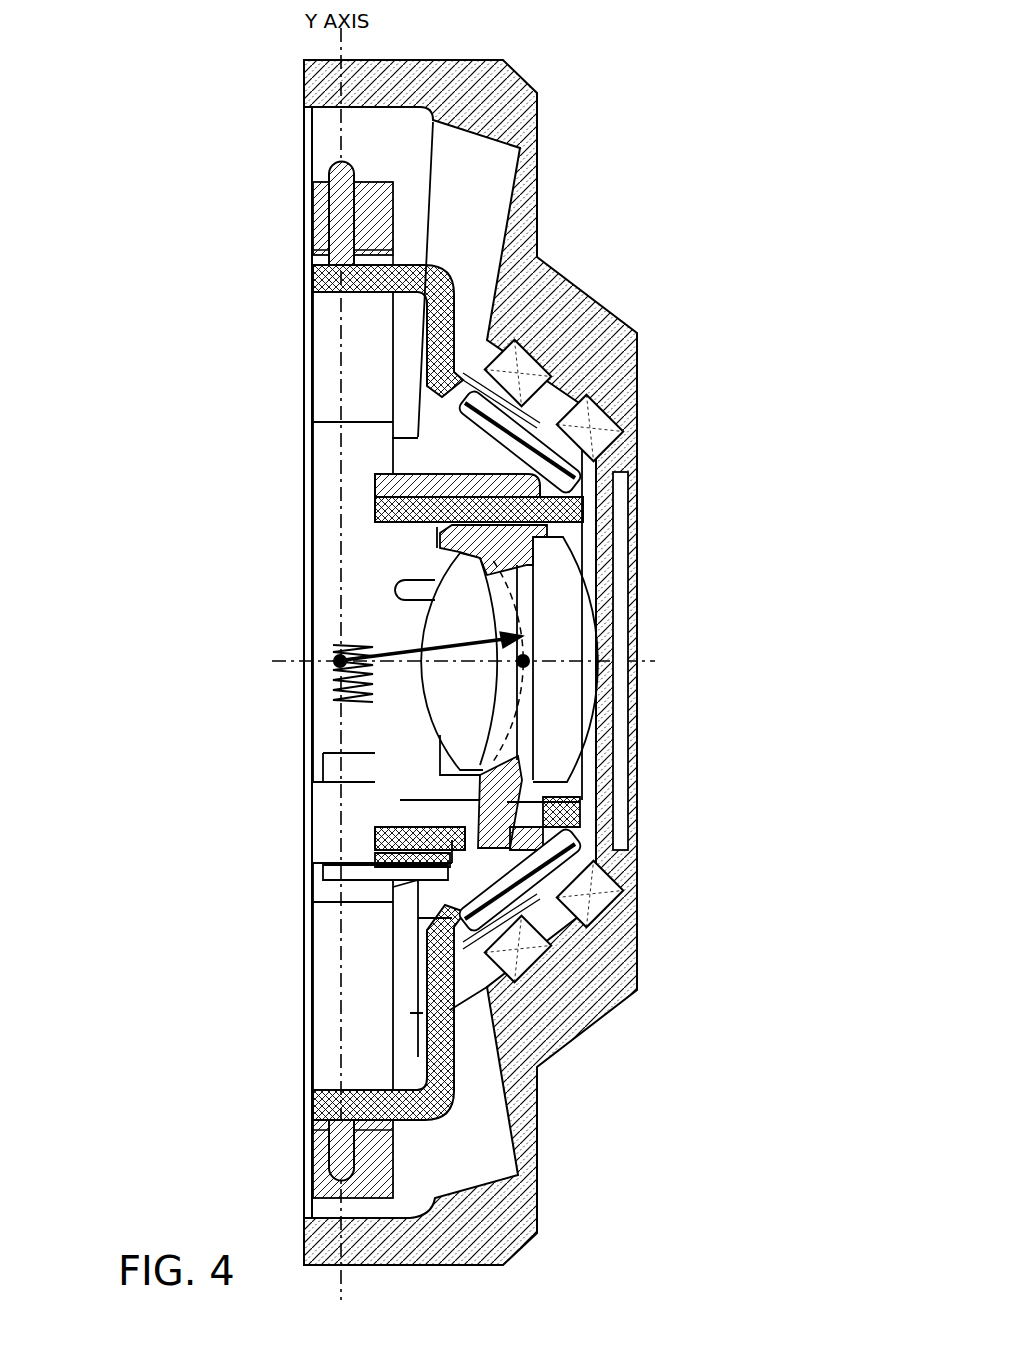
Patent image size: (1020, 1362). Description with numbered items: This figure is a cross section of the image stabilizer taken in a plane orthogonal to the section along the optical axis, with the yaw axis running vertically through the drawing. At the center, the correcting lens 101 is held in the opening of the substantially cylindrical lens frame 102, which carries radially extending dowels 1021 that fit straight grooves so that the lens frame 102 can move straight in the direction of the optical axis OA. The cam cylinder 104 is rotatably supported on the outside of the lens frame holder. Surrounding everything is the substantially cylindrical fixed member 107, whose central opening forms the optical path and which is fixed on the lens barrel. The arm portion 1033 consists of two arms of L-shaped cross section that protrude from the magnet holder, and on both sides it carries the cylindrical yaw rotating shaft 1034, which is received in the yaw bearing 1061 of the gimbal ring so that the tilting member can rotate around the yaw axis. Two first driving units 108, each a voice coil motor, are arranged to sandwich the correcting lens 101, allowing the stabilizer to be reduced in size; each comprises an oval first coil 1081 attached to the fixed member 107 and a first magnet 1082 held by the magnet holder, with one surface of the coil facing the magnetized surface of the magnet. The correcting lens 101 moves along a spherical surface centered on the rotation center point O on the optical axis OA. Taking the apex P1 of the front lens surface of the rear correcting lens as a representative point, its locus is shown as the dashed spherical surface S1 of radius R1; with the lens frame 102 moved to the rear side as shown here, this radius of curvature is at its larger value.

The correcting lens 101 is at (580, 595).
The lens frame 102 is at (557, 533).
The dowels 1021 is at (490, 817).
The cam cylinder 104 is at (385, 474).
The fixed member 107 is at (520, 1127).
The first driving unit 108 is at (622, 661).
The first coil 1081 is at (593, 423).
The first magnet 1082 is at (545, 450).
The arm portion 1033 is at (440, 282).
The yaw rotating shaft 1034 is at (332, 174).
The yaw bearing 1061 is at (310, 1167).
The rotation center point O is at (340, 660).
The apex P1 is at (530, 658).
The radius R1 is at (433, 640).
The spherical surface S1 is at (525, 707).
The optical axis OA is at (282, 661).